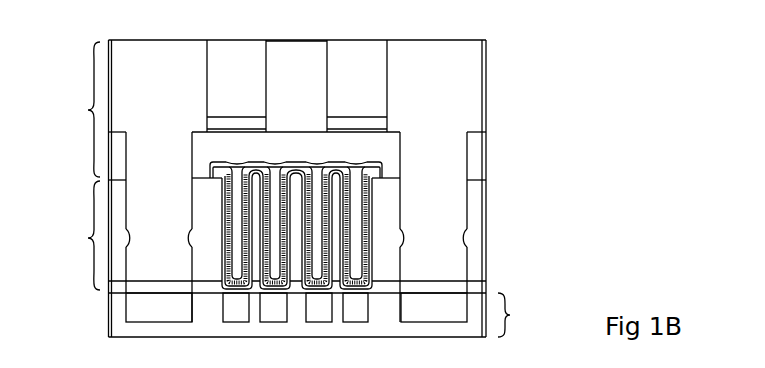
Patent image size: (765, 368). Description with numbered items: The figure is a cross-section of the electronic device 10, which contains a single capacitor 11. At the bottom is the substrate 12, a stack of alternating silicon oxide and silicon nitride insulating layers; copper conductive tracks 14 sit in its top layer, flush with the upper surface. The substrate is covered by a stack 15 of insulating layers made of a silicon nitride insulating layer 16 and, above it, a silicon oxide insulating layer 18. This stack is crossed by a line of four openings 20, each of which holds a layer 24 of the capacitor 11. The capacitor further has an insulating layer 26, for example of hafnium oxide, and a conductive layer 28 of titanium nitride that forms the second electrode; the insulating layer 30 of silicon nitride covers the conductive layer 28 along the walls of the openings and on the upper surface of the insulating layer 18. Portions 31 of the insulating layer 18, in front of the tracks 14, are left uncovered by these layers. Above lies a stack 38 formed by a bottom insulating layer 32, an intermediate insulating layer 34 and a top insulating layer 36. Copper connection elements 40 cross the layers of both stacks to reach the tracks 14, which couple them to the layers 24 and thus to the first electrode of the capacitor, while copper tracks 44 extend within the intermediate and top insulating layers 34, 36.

The electronic device 10 is at (512, 63).
The capacitor 11 is at (321, 162).
The substrate 12 is at (321, 315).
The copper conductive tracks 14 is at (168, 308).
The stack of insulating layers 15 is at (95, 236).
The insulating layer 16 is at (482, 289).
The insulating layer 18 is at (478, 256).
The opening 20 is at (380, 272).
The layer 24 is at (372, 219).
The insulating layer 26 is at (220, 238).
The conductive layer 28 is at (380, 174).
The layer 30 is at (364, 160).
The portions of layer 31 is at (123, 178).
The insulating layer 32 is at (106, 150).
The insulating layer 34 is at (220, 124).
The insulating layer 36 is at (240, 58).
The stack of insulating layers 38 is at (80, 109).
The connection elements 40 is at (139, 58).
The tracks 44 is at (297, 58).